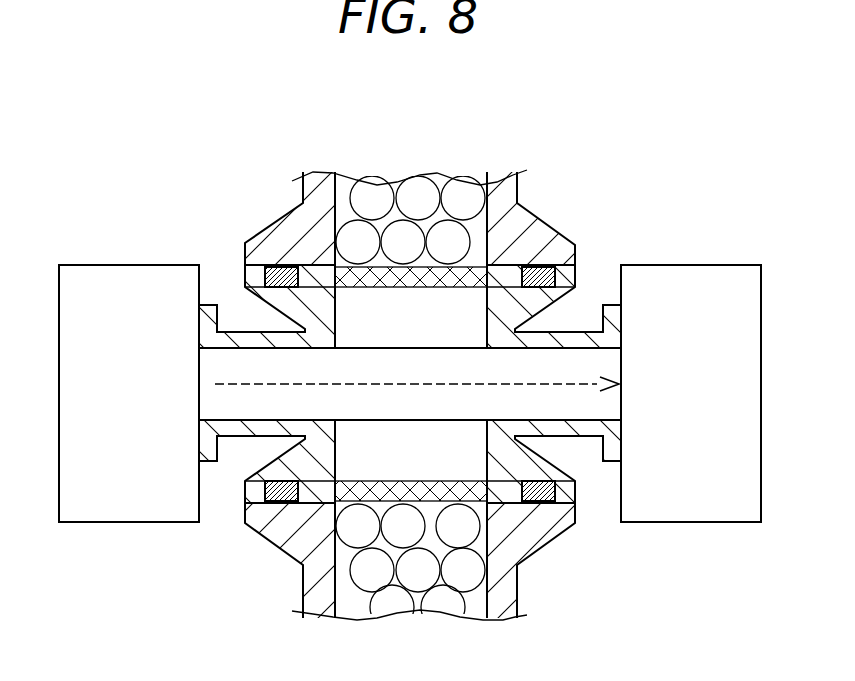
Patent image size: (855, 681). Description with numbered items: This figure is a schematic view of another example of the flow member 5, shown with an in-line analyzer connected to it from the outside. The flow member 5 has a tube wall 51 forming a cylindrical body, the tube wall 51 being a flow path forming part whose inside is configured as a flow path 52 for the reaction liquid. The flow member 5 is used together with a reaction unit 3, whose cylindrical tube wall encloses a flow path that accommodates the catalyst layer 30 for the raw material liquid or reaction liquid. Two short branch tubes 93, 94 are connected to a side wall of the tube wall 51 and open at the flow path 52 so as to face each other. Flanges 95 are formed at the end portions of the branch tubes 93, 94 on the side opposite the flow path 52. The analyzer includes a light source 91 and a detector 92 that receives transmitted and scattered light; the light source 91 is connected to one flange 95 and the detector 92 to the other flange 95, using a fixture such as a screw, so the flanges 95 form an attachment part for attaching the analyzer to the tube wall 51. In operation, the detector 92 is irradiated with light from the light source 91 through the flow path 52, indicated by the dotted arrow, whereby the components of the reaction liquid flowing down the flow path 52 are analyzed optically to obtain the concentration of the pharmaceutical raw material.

The reaction unit 3 is at (517, 192).
The flow member 5 is at (216, 262).
The catalyst layer 30 is at (476, 243).
The tube wall 51 is at (470, 302).
The flow path 52 is at (515, 328).
The light source 91 is at (88, 523).
The detector 92 is at (732, 523).
The branch tube 93 is at (250, 427).
The branch tube 94 is at (572, 427).
The flange 95 is at (206, 450).